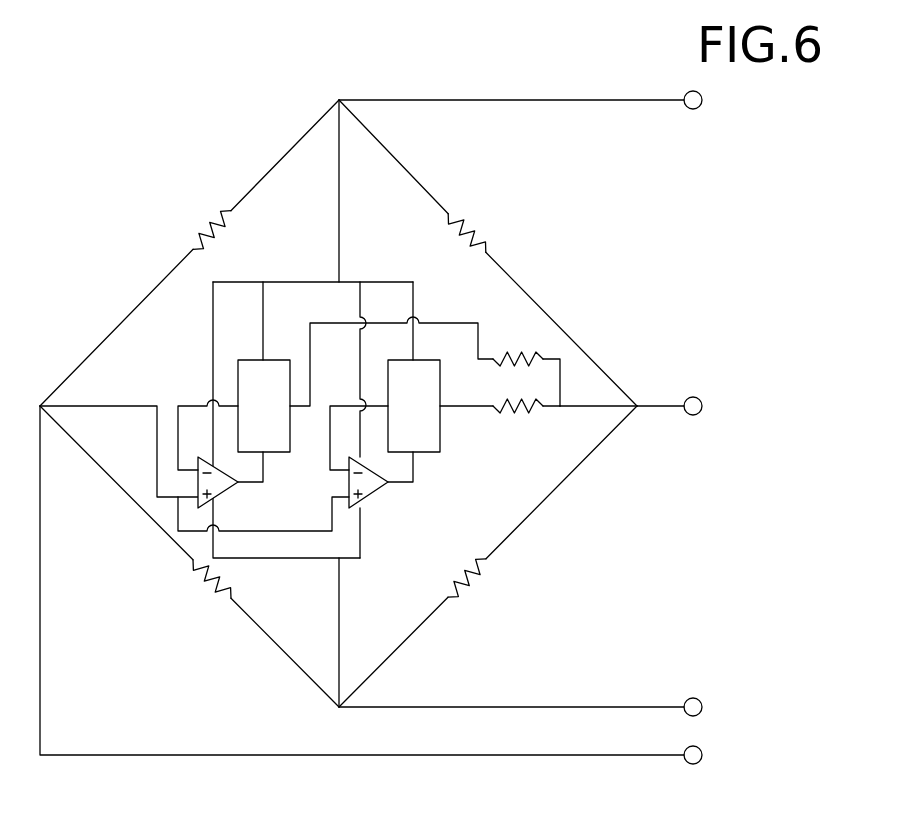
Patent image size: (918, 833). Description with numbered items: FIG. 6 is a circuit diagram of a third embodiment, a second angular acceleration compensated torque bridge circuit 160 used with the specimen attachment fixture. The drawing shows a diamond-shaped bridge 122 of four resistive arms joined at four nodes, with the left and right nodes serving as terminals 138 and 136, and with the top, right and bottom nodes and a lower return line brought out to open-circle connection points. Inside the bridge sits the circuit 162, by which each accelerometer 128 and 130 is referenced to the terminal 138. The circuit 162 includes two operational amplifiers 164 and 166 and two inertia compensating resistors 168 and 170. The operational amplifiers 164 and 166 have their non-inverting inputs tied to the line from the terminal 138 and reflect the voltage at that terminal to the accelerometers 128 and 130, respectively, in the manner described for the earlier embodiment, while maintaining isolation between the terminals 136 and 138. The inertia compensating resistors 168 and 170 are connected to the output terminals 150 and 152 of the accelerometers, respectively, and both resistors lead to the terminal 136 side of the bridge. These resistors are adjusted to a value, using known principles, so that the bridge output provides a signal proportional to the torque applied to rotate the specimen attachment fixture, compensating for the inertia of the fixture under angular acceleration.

The bridge circuit 122 is at (600, 252).
The angular acceleration compensated torque bridge circuit 160 is at (178, 172).
The circuit 162 is at (418, 560).
The terminal 138 is at (40, 406).
The terminal 136 is at (637, 406).
The accelerometer 128 is at (273, 358).
The accelerometer 130 is at (440, 452).
The operational amplifier 164 is at (222, 493).
The operational amplifier 166 is at (372, 498).
The output terminal 150 is at (293, 408).
The output terminal 152 is at (447, 403).
The inertia compensating resistor 168 is at (527, 408).
The inertia compensating resistor 170 is at (522, 358).